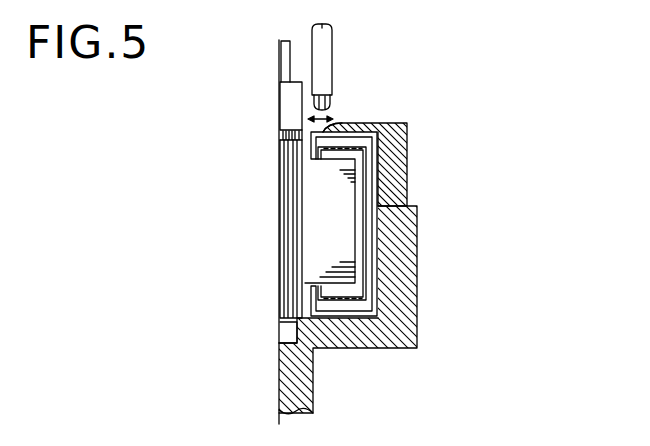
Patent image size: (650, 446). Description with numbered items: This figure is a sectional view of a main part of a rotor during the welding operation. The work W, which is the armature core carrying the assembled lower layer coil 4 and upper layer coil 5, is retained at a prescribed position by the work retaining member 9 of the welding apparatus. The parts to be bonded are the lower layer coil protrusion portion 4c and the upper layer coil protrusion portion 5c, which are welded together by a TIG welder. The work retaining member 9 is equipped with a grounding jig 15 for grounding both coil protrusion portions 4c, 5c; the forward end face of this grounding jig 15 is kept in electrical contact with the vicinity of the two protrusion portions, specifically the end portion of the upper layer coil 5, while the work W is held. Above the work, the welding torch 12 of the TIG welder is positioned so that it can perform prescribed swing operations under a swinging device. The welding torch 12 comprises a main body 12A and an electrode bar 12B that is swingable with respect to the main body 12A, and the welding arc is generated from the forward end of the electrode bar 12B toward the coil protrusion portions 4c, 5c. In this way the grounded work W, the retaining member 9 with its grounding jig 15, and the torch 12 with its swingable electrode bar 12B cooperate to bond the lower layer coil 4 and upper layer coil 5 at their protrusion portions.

The welding torch 12 is at (382, 67).
The main body 12A is at (320, 44).
The electrode bar 12B is at (330, 101).
The upper layer coil protrusion portion 5c is at (336, 122).
The grounding jig 15 is at (392, 134).
The upper layer coil 5 is at (372, 194).
The lower layer coil 4 is at (363, 241).
The work retaining member 9 is at (400, 272).
The lower layer coil protrusion portion 4c is at (300, 139).
The work W is at (283, 292).